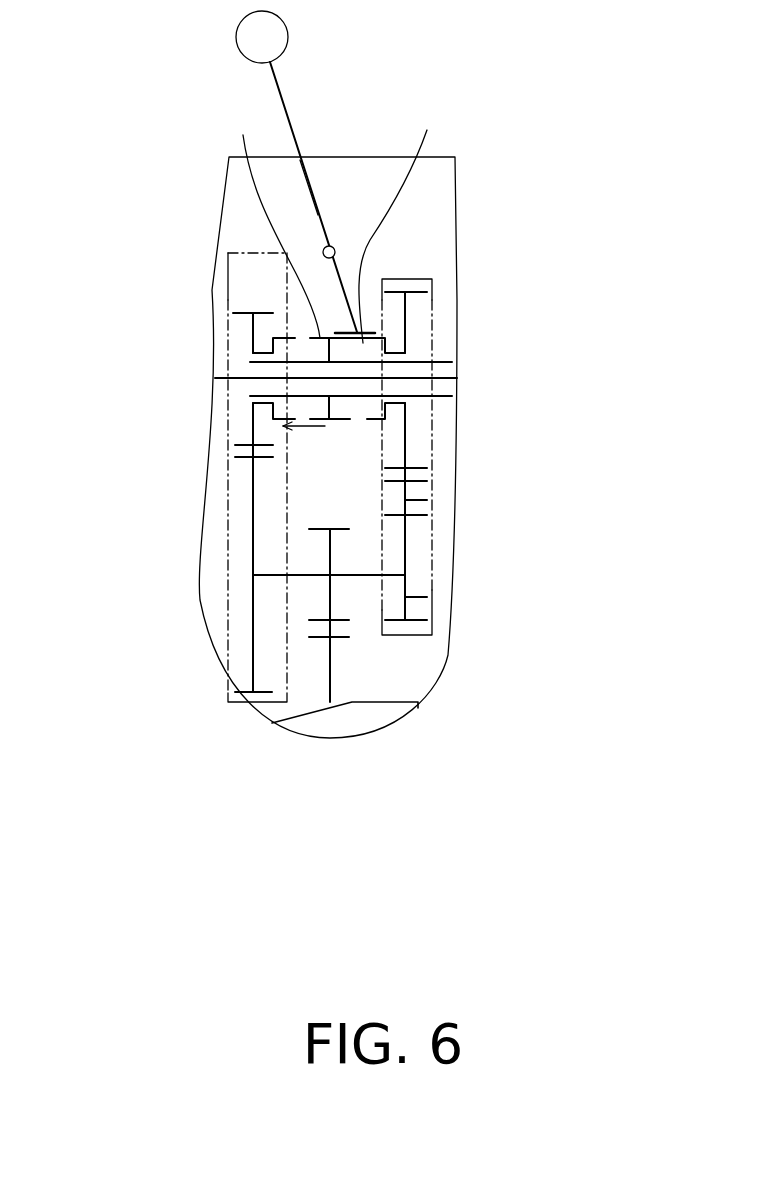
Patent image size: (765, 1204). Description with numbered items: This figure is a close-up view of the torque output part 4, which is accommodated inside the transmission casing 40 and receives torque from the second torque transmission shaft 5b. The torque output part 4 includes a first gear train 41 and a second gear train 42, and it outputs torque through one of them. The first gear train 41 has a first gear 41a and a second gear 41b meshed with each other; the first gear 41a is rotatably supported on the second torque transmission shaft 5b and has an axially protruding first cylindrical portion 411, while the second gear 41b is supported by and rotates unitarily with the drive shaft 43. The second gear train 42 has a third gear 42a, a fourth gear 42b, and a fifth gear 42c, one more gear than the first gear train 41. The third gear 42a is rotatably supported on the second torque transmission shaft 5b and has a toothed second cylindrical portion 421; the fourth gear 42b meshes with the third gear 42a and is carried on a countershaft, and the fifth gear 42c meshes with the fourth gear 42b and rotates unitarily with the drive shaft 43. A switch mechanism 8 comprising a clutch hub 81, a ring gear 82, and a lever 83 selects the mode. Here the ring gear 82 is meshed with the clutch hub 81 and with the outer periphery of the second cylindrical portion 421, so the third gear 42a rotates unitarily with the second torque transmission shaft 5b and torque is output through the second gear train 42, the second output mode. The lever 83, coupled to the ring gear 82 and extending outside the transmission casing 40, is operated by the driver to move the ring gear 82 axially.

The torque output part 4 is at (257, 237).
The switch mechanism 8 is at (350, 237).
The clutch hub 81 is at (269, 219).
The ring gear 82 is at (398, 219).
The lever 83 is at (313, 197).
The transmission casing 40 is at (440, 157).
The first gear train 41 is at (240, 252).
The first gear 41a is at (247, 318).
The second gear 41b is at (253, 543).
The first cylindrical portion 411 is at (253, 343).
The second gear train 42 is at (431, 278).
The third gear 42a is at (428, 312).
The fourth gear 42b is at (427, 500).
The fifth gear 42c is at (427, 598).
The second cylindrical portion 421 is at (406, 348).
The drive shaft 43 is at (300, 578).
The second torque transmission shaft 5b is at (452, 397).